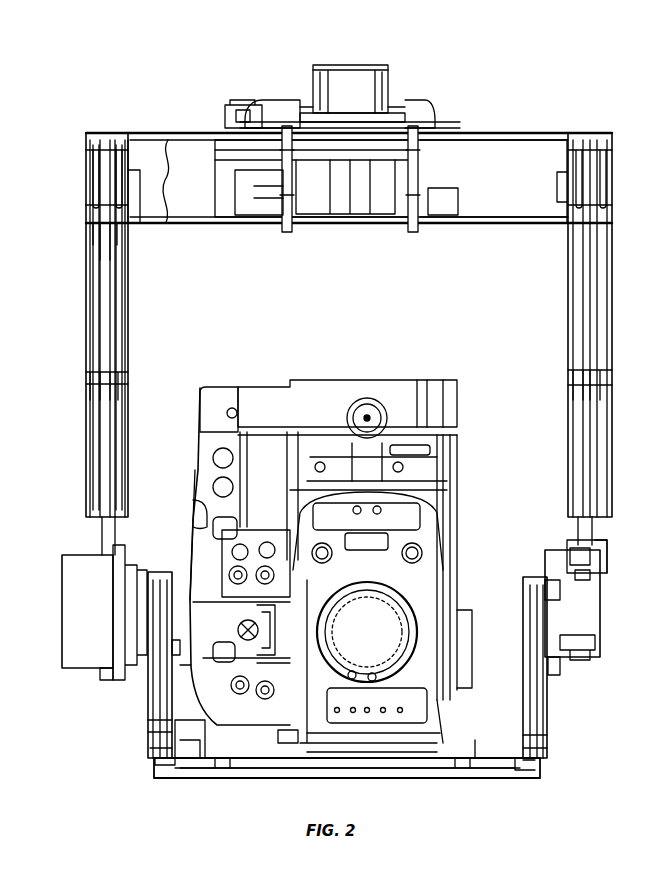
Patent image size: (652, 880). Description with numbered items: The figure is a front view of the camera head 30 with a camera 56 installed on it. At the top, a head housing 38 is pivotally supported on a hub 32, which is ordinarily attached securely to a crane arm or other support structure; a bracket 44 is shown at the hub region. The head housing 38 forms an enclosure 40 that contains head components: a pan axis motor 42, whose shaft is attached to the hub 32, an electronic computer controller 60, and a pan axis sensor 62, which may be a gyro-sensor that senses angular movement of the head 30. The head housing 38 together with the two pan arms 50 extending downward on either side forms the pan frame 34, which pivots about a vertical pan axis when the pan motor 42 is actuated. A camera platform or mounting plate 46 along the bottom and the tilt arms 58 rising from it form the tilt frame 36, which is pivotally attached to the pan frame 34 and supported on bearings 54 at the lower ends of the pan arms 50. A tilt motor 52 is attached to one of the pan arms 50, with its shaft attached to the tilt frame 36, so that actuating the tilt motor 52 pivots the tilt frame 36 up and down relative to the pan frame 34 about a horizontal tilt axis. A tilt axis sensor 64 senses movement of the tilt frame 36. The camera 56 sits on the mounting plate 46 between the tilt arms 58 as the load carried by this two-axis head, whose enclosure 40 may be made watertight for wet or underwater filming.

The head 30 is at (462, 122).
The hub 32 is at (312, 78).
The pan frame 34 is at (84, 311).
The tilt frame 36 is at (198, 782).
The head housing 38 is at (270, 222).
The enclosure 40 is at (498, 201).
The pan axis motor 42 is at (308, 192).
The bracket 44 is at (348, 105).
The mounting plate 46 is at (452, 768).
The pan arms 50 is at (124, 344).
The tilt motor 52 is at (80, 636).
The bearings 54 is at (550, 580).
The camera 56 is at (440, 440).
The tilt arms 58 is at (148, 702).
The electronic computer controller 60 is at (240, 190).
The pan axis sensor 62 is at (450, 202).
The tilt axis sensor 64 is at (190, 740).